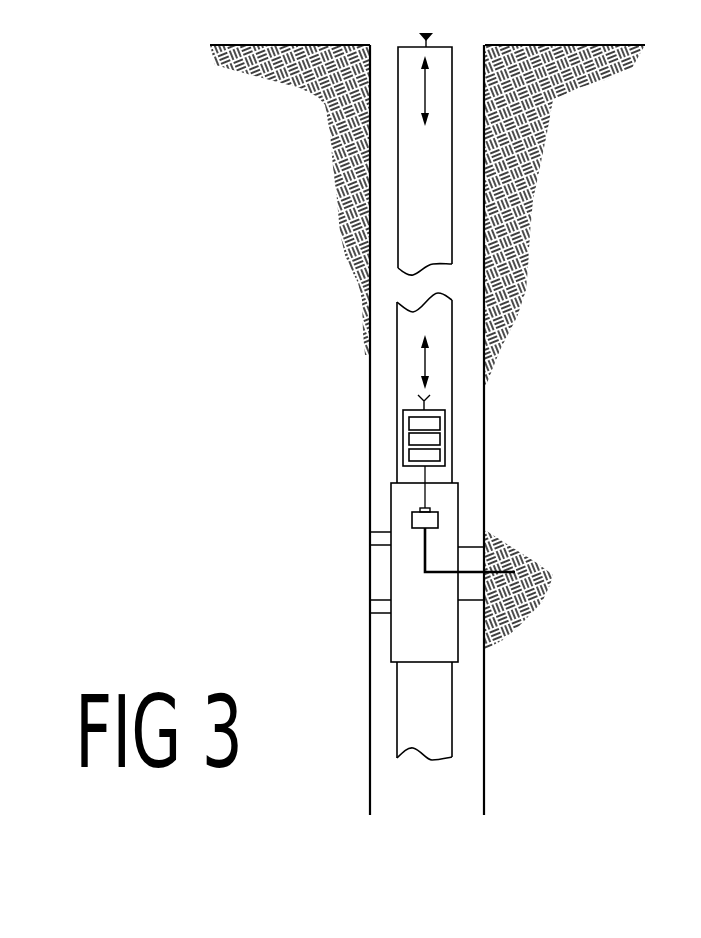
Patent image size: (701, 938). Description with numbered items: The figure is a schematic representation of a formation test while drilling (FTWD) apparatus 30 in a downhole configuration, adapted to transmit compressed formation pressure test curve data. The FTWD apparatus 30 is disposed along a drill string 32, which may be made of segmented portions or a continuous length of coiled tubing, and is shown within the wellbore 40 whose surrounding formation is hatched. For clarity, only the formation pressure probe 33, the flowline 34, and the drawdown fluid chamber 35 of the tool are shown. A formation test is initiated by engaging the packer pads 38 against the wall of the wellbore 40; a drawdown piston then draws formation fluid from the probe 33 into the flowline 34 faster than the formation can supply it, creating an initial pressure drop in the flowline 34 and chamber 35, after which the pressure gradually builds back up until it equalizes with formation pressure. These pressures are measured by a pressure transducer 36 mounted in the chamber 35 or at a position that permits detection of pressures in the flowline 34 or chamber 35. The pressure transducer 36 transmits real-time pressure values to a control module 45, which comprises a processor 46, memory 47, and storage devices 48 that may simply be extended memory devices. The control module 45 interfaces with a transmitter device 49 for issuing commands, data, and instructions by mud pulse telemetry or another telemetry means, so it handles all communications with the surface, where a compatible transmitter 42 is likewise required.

The formation test while drilling (FTWD) apparatus 30 is at (443, 630).
The drill string 32 is at (442, 317).
The formation pressure probe 33 is at (510, 558).
The flowline 34 is at (422, 555).
The drawdown fluid chamber 35 is at (412, 520).
The pressure transducer 36 is at (422, 509).
The packer pad 38 is at (474, 556).
The wellbore 40 is at (483, 127).
The transmitter 42 is at (428, 42).
The control module 45 is at (422, 443).
The processor 46 is at (409, 423).
The memory 47 is at (409, 434).
The storage devices 48 is at (409, 453).
The transmitter device 49 is at (428, 405).